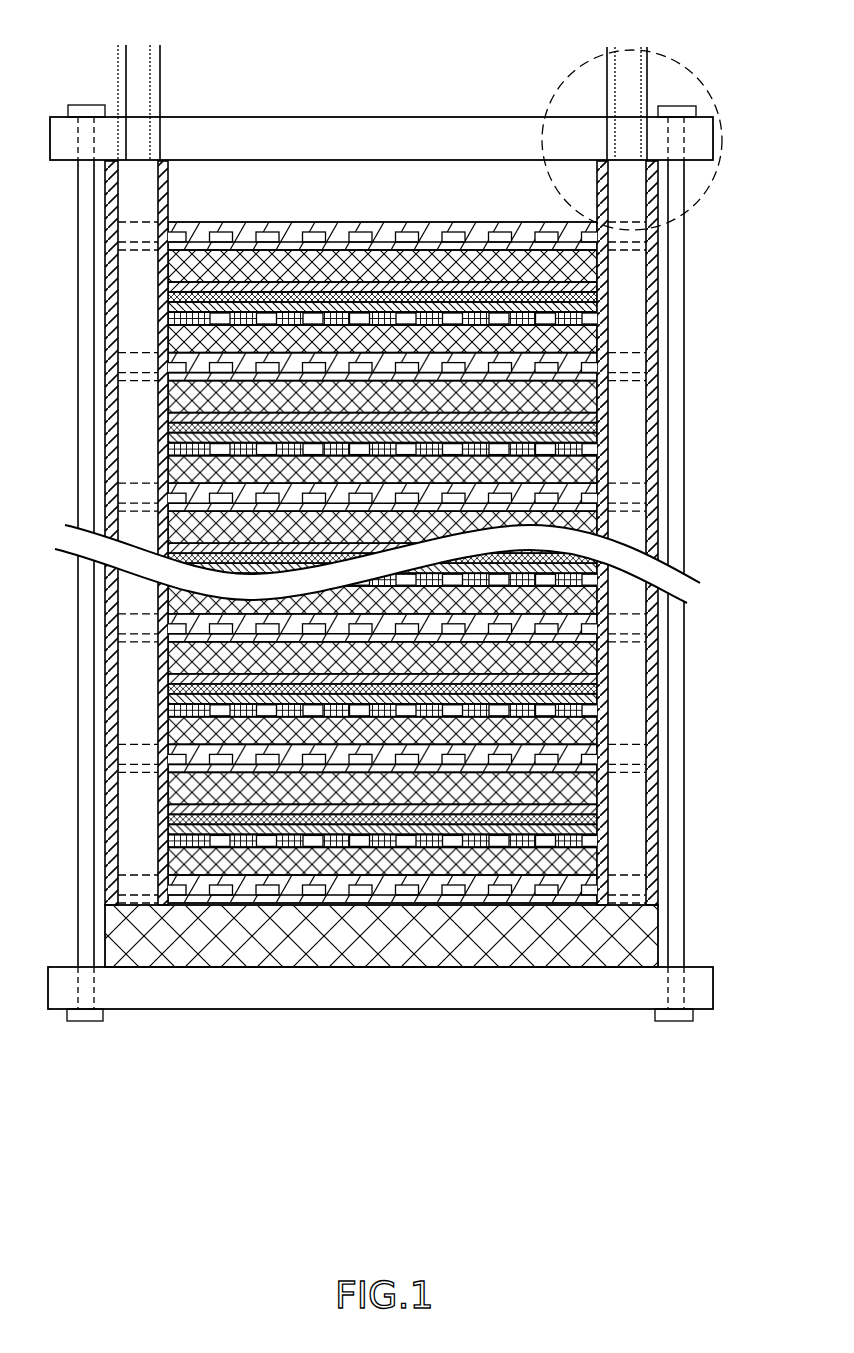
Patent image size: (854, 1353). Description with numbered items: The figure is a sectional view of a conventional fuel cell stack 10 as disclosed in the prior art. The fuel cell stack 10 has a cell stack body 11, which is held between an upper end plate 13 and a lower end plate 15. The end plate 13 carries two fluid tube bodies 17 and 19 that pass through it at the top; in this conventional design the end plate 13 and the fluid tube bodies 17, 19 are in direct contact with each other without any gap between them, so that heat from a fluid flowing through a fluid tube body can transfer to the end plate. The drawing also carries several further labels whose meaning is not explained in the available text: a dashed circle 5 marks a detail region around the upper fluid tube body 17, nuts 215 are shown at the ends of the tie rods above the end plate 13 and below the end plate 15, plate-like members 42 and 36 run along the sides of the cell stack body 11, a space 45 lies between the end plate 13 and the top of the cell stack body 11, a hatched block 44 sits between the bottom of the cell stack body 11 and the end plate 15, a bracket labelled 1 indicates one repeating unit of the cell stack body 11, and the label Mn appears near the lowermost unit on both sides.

The fuel cell stack 10 is at (386, 52).
The cell stack body 11 is at (446, 641).
The single cell 1 is at (692, 353).
The detail region 5 is at (560, 82).
The end plate 13 is at (297, 141).
The end plate 15 is at (338, 987).
The fluid tube body 17 is at (612, 78).
The fluid tube body 19 is at (120, 78).
The nut 215 is at (673, 107).
The outer insulating plate 36 is at (657, 305).
The insulating plate 42 is at (166, 178).
The spacer block 44 is at (463, 940).
The space 45 is at (235, 193).
The cell module Mn is at (138, 848).